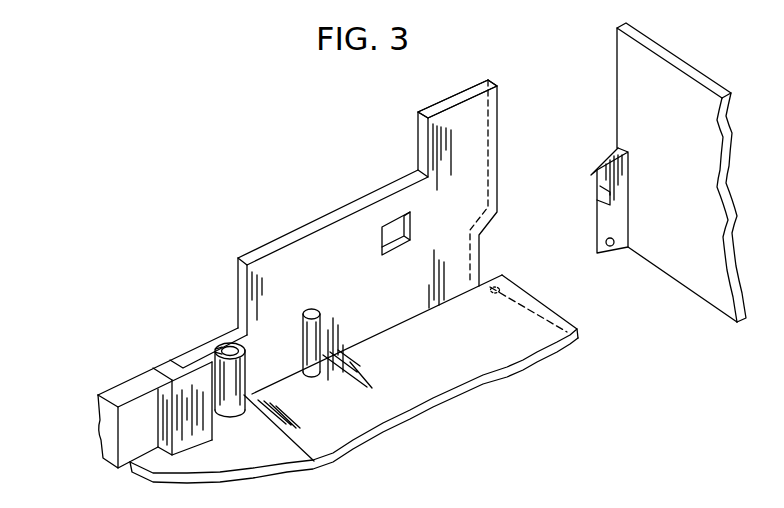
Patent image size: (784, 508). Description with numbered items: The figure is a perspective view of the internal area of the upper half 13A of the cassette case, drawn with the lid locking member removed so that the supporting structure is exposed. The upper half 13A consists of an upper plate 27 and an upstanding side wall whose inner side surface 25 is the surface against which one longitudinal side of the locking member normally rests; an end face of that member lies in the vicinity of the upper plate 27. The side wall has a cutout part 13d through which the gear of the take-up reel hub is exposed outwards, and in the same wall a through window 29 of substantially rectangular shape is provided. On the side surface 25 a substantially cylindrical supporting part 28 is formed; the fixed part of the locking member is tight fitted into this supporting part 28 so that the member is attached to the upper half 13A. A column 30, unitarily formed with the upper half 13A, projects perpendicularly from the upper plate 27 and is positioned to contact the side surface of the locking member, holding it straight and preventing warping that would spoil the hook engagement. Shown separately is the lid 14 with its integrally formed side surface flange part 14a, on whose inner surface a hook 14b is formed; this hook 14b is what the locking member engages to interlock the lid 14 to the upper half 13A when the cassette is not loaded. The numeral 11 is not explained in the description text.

The base plate rear corner / hidden hole 11 is at (502, 275).
The upper half 13A is at (139, 368).
The cutout part 13d is at (423, 147).
The lid 14 is at (690, 70).
The side surface flange part 14a is at (615, 157).
The hook 14b is at (598, 195).
The inner side surface 25 is at (468, 110).
The upper plate 27 is at (408, 405).
The supporting part 28 is at (217, 345).
The through window 29 is at (382, 238).
The column 30 is at (317, 379).